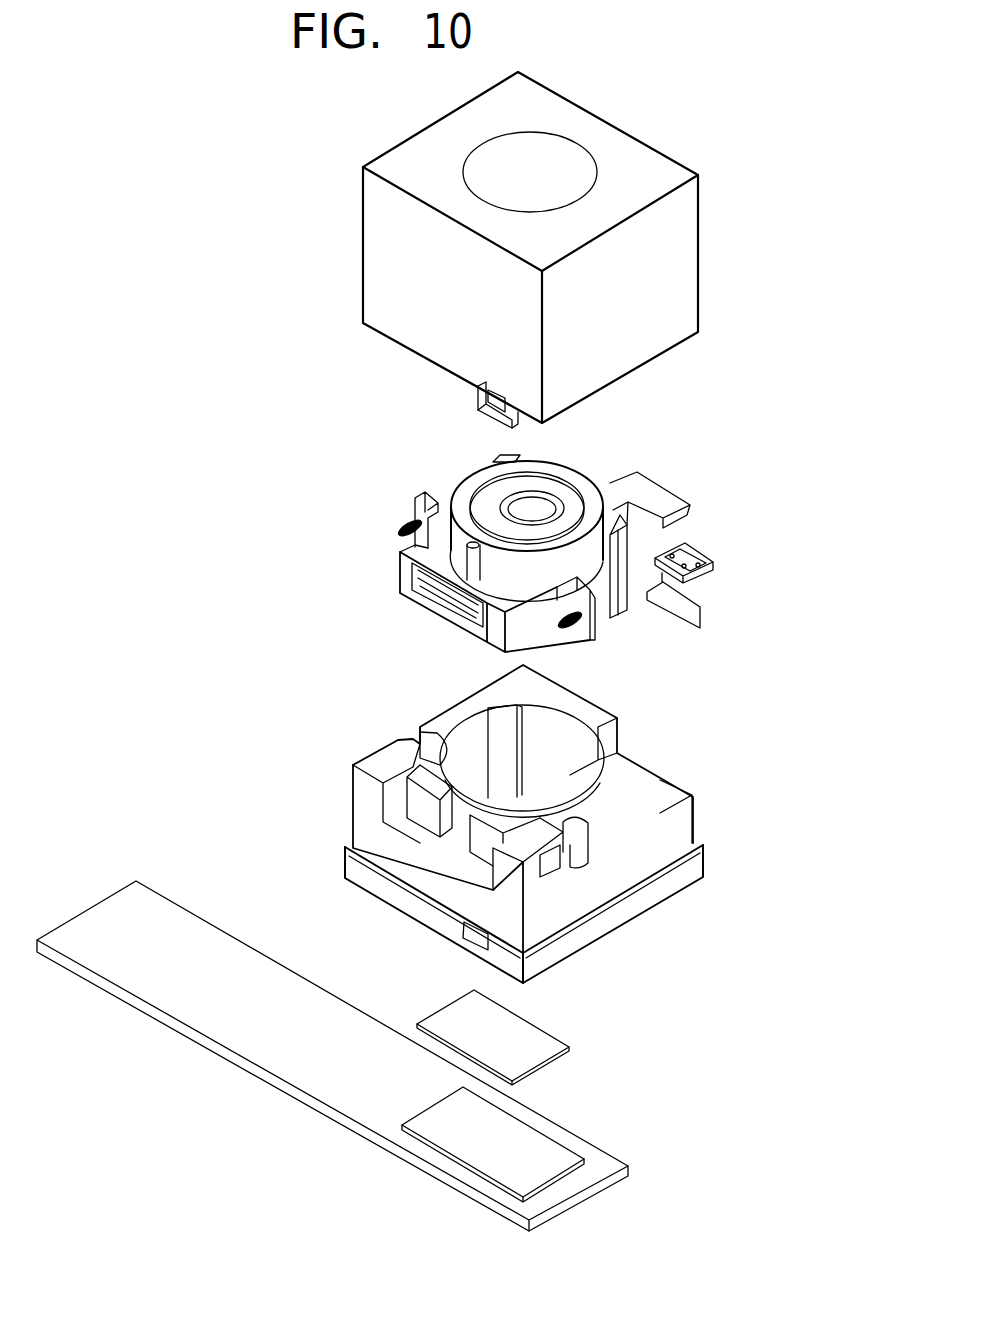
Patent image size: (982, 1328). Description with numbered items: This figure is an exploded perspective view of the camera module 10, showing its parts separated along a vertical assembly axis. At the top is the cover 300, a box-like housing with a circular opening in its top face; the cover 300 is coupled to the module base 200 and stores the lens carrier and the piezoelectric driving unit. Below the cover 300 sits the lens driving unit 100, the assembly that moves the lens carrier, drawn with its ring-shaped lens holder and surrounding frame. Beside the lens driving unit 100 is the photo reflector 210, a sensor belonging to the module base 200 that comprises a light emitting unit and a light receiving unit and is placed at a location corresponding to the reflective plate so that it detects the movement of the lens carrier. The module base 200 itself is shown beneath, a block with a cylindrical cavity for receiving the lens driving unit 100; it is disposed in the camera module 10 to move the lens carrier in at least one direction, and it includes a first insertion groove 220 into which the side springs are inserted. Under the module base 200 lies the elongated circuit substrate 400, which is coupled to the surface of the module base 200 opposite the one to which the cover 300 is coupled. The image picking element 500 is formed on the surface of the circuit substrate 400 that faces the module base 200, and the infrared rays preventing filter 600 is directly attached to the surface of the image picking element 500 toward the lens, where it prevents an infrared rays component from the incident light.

The camera module 10 is at (715, 85).
The cover 300 is at (678, 277).
The lens driving unit 100 is at (688, 488).
The photo reflector 210 is at (700, 548).
The module base 200 is at (682, 808).
The first insertion groove 220 is at (558, 855).
The circuit substrate 400 is at (316, 1108).
The image picking element 500 is at (539, 1166).
The infrared rays preventing filter 600 is at (539, 1054).